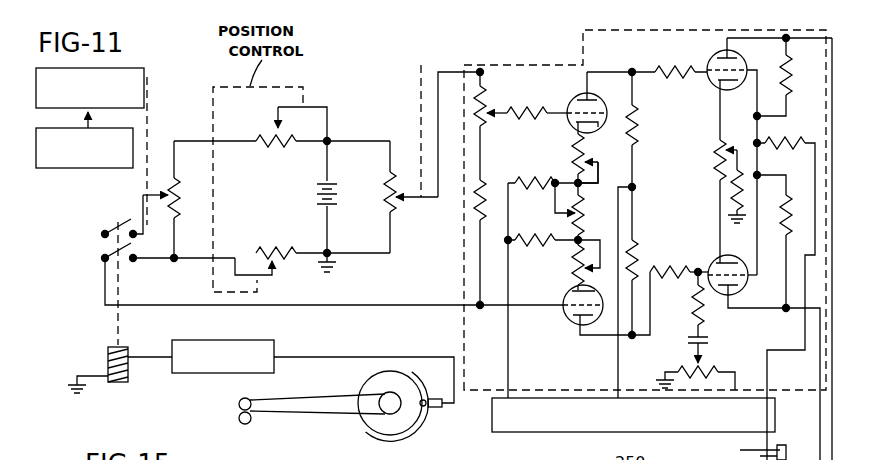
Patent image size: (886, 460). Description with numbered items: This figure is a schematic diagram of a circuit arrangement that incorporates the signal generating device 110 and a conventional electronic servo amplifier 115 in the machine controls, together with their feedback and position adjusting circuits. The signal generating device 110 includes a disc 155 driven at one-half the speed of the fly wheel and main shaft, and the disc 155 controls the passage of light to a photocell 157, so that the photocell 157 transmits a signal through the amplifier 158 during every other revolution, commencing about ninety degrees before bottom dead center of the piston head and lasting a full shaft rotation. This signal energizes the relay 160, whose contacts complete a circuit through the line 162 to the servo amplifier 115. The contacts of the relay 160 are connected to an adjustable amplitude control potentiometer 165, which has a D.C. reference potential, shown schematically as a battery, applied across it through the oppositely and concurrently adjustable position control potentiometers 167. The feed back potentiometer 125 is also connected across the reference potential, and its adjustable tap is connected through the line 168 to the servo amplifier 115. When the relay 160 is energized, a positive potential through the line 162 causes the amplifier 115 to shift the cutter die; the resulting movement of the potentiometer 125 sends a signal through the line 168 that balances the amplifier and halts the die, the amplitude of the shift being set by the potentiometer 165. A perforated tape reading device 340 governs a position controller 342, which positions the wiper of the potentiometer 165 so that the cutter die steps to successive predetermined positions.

The position controller 342 is at (152, 71).
The perforated tape reading device 340 is at (53, 170).
The adjustable amplitude control potentiometer 165 is at (157, 190).
The position control potentiometers 167 is at (290, 150).
The line 168 is at (438, 114).
The feed back potentiometer 125 is at (404, 205).
The electronic servo amplifier 115 is at (460, 275).
The line 162 is at (310, 305).
The relay 160 is at (115, 350).
The amplifier 158 is at (186, 377).
The disc 155 is at (378, 381).
The signal generating device 110 is at (352, 426).
The photocell 157 is at (424, 416).